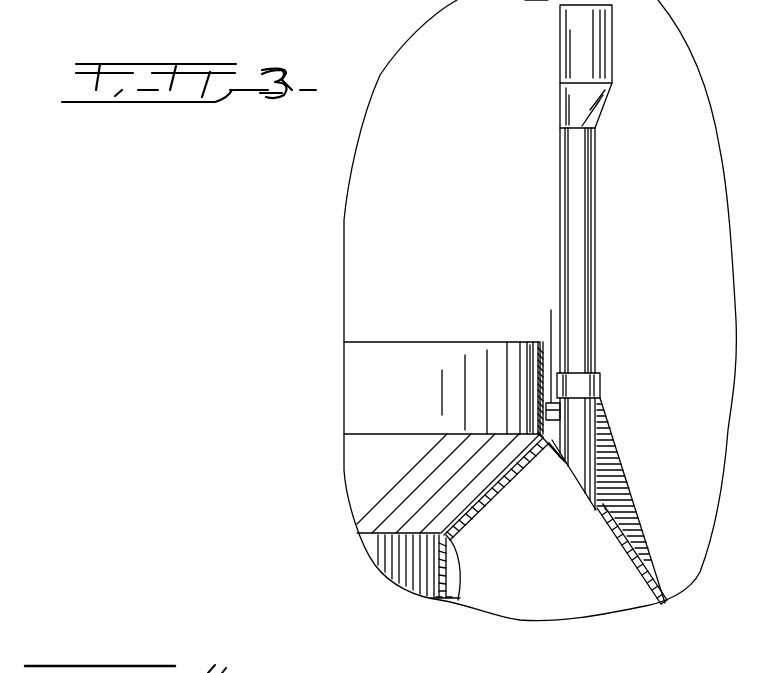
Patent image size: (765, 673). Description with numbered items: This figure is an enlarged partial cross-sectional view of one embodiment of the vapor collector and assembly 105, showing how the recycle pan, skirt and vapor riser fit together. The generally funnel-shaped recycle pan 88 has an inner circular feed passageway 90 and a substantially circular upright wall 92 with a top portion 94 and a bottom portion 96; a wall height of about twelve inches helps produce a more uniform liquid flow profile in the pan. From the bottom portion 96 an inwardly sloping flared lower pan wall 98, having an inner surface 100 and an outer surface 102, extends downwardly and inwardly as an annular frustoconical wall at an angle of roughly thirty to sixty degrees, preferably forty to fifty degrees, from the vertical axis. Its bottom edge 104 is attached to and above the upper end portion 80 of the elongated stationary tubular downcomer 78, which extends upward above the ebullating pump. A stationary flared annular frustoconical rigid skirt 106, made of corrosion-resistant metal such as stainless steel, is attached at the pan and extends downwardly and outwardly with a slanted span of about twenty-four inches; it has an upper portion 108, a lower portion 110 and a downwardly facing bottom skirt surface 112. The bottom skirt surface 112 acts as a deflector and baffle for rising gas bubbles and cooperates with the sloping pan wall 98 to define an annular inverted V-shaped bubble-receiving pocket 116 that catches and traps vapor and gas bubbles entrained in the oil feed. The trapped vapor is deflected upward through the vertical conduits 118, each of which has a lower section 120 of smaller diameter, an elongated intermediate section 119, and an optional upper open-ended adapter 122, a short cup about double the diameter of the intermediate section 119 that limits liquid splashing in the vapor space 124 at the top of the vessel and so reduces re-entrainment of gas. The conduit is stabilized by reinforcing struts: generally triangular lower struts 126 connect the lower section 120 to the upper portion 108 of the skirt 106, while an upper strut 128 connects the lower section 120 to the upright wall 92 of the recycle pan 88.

The downcomer 78 is at (430, 598).
The upper end portion 80 is at (450, 600).
The recycle pan 88 is at (424, 340).
The inner circular feed passageway 90 is at (384, 548).
The upright wall 92 is at (538, 375).
The top portion 94 is at (540, 341).
The bottom portion 96 is at (538, 434).
The inwardly sloping flared lower pan wall 98 is at (452, 530).
The inner surface 100 is at (478, 492).
The outer surface 102 is at (468, 509).
The bottom edge 104 is at (456, 600).
The vapor collector and assembly 105 is at (540, 446).
The skirt 106 is at (628, 552).
The upper portion 108 is at (553, 462).
The lower portion 110 is at (657, 603).
The bottom skirt surface 112 is at (608, 525).
The bubble-receiving pocket 116 is at (537, 574).
The vertical conduits 118 is at (594, 215).
The intermediate section 119 is at (560, 165).
The lower section 120 is at (600, 425).
The adapter 122 is at (612, 58).
The vapor space 124 is at (517, 68).
The lower struts 126 is at (622, 462).
The upper strut 128 is at (551, 310).